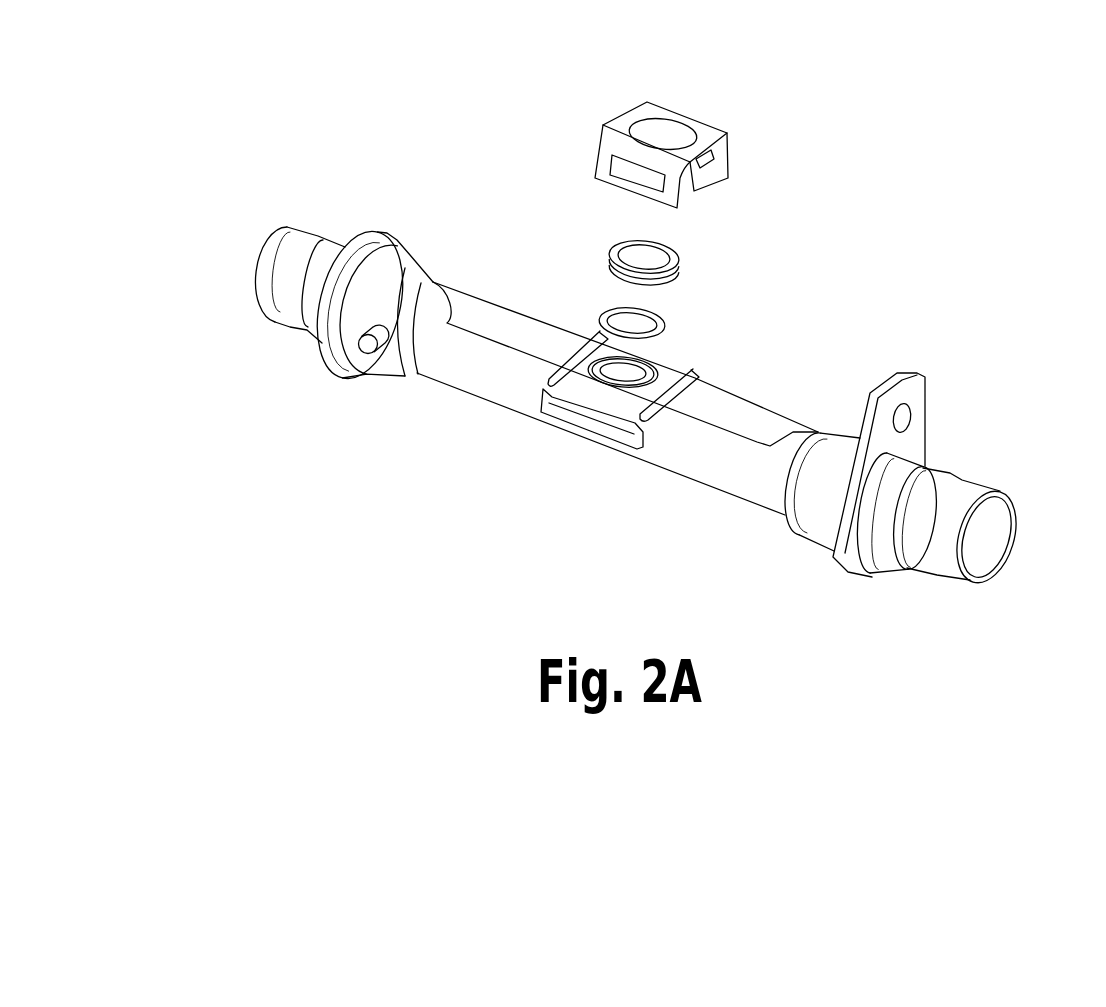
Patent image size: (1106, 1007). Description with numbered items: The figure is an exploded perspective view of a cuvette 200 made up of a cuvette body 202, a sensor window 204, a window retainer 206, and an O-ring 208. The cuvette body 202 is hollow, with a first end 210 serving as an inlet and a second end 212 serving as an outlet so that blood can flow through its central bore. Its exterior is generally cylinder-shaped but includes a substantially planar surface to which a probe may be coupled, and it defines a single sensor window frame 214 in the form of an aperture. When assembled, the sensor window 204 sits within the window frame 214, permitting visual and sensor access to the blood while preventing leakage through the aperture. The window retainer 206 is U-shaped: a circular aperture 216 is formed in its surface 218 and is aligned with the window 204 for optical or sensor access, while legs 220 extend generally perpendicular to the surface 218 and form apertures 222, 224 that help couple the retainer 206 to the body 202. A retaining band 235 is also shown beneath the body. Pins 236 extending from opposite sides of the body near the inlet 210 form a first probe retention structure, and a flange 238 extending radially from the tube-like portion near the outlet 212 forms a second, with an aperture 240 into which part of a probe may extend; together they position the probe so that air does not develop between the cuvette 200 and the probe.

The cuvette 200 is at (543, 545).
The cuvette body 202 is at (472, 313).
The sensor window 204 is at (630, 252).
The window retainer 206 is at (618, 123).
The O-ring 208 is at (664, 330).
The first end 210 is at (226, 240).
The second end 212 is at (980, 545).
The single sensor window frame 214 is at (613, 348).
The circular aperture 216 is at (670, 134).
The surface 218 is at (708, 129).
The legs 220 is at (603, 162).
The aperture 222 is at (648, 176).
The aperture 224 is at (708, 162).
The retaining band 235 is at (600, 430).
The pins 236 is at (370, 348).
The flange 238 is at (908, 373).
The aperture 240 is at (903, 421).